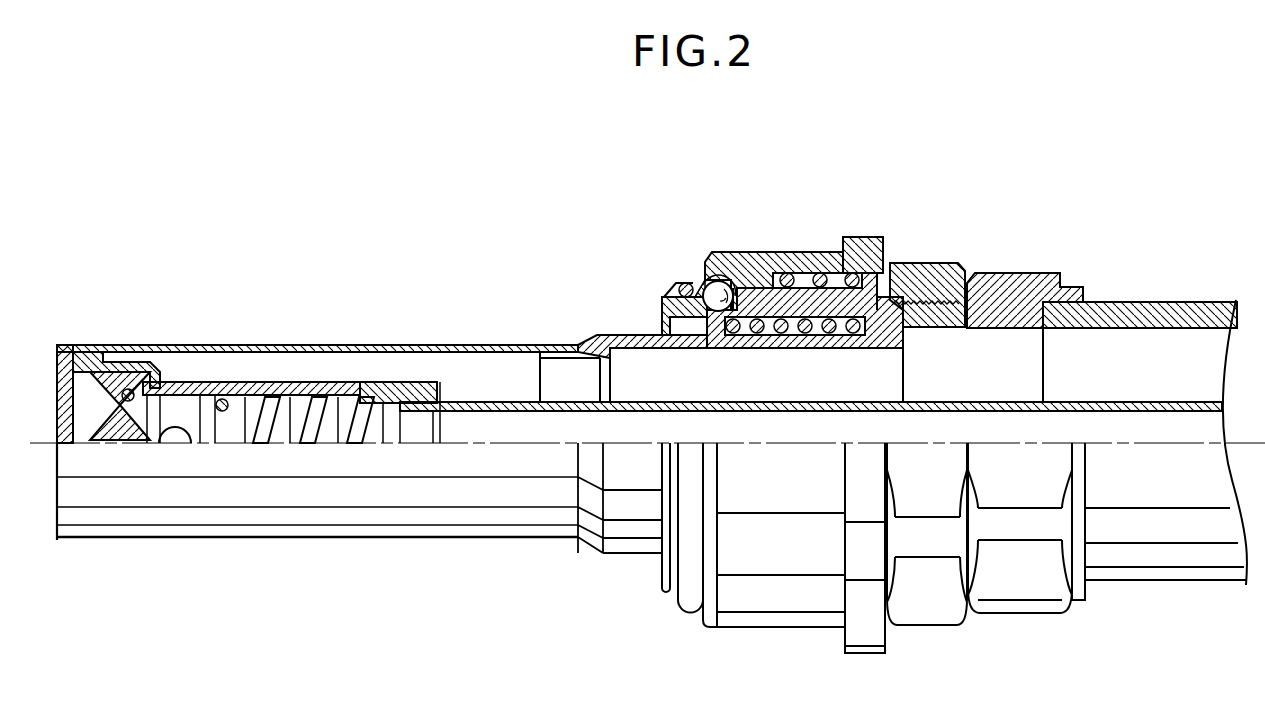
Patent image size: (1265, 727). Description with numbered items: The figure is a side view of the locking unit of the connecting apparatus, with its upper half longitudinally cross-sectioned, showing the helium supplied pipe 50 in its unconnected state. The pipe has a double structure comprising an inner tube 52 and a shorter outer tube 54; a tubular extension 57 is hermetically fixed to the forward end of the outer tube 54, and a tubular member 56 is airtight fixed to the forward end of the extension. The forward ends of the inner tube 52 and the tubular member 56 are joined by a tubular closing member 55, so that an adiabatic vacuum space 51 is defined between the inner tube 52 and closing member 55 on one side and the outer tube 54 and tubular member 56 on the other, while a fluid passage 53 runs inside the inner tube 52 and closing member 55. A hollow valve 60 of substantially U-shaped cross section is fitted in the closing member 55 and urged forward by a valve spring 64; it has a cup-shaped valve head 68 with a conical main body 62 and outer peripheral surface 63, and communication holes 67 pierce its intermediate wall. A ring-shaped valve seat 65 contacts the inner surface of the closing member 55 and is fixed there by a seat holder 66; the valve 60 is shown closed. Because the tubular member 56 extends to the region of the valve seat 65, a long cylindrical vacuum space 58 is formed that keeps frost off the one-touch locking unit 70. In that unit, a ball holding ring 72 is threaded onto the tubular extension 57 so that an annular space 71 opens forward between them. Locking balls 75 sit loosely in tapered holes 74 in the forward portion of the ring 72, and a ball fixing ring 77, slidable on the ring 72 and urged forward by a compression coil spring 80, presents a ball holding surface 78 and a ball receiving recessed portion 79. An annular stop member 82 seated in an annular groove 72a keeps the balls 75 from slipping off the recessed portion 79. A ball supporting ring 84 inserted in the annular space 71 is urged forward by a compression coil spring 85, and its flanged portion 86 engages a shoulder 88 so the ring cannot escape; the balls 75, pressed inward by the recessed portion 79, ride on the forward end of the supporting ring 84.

The helium supplied pipe 50 is at (1134, 592).
The adiabatic vacuum space 51 is at (1143, 345).
The inner tube 52 is at (472, 411).
The fluid passage 53 is at (538, 432).
The outer tube 54 is at (1192, 310).
The tubular closing member 55 is at (342, 382).
The tubular member 56 is at (440, 345).
The tubular extension 57 is at (1003, 290).
The long cylindrical vacuum space 58 is at (288, 366).
The hollow valve 60 is at (300, 443).
The conical main body 62 is at (180, 443).
The outer peripheral surface 63 is at (128, 443).
The valve spring 64 is at (222, 382).
The valve seat 65 is at (130, 378).
The seat holder 66 is at (90, 345).
The communication holes 67 is at (253, 443).
The valve head 68 is at (90, 443).
The one-touch locking unit 70 is at (778, 240).
The annular space 71 is at (688, 330).
The ball holding ring 72 is at (927, 272).
The annular groove 72a is at (664, 295).
The tapered holes 74 is at (662, 320).
The locking balls 75 is at (710, 278).
The ball fixing ring 77 is at (868, 262).
The ball holding surface 78 is at (718, 281).
The ball receiving recessed portion 79 is at (700, 285).
The compression coil spring 80 is at (818, 273).
The annular stop member 82 is at (679, 287).
The ball supporting ring 84 is at (800, 334).
The compression coil spring 85 is at (832, 300).
The flanged portion 86 is at (762, 334).
The shoulder 88 is at (735, 290).